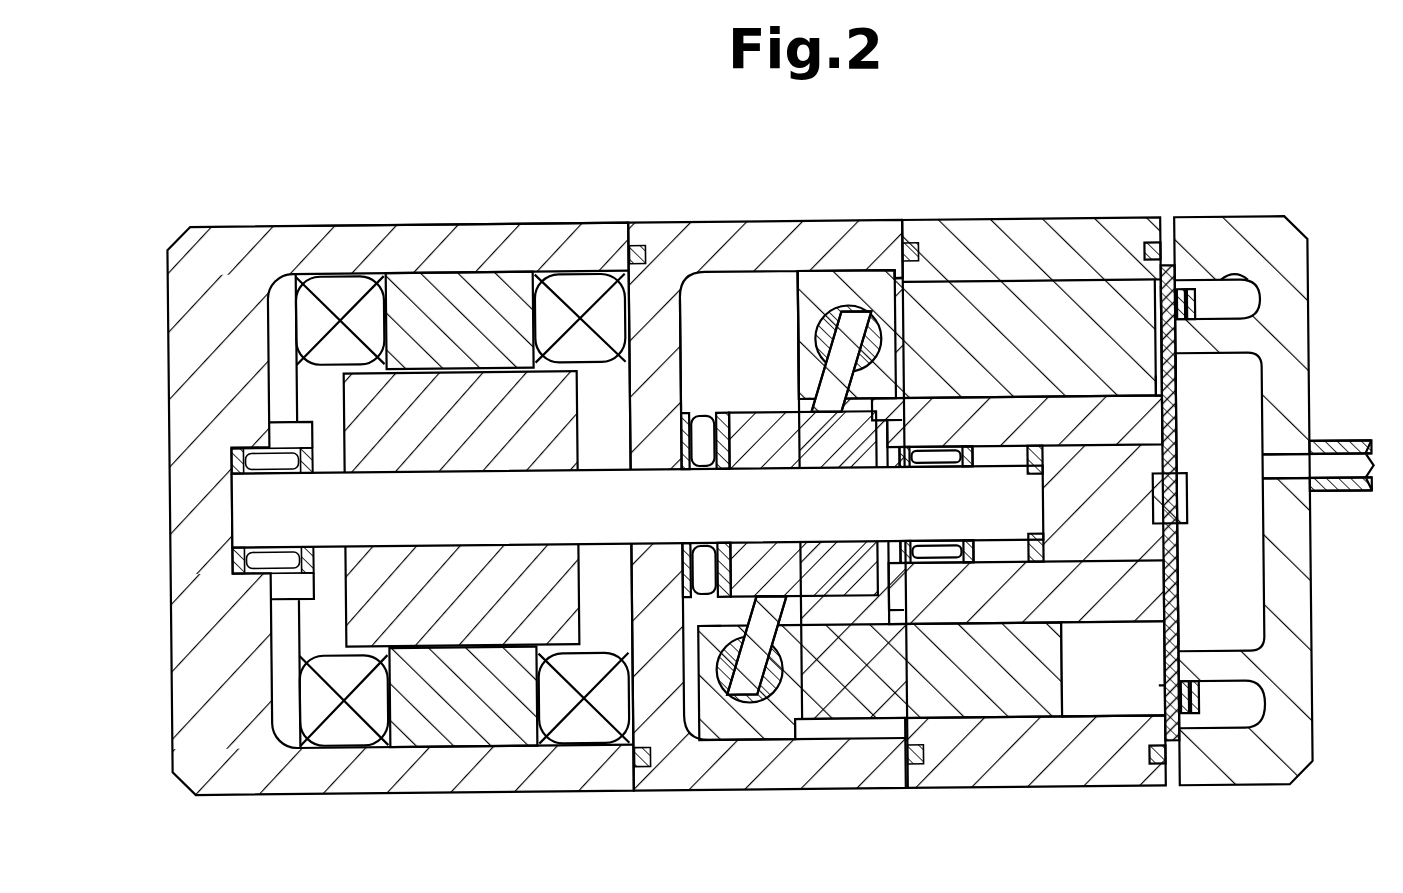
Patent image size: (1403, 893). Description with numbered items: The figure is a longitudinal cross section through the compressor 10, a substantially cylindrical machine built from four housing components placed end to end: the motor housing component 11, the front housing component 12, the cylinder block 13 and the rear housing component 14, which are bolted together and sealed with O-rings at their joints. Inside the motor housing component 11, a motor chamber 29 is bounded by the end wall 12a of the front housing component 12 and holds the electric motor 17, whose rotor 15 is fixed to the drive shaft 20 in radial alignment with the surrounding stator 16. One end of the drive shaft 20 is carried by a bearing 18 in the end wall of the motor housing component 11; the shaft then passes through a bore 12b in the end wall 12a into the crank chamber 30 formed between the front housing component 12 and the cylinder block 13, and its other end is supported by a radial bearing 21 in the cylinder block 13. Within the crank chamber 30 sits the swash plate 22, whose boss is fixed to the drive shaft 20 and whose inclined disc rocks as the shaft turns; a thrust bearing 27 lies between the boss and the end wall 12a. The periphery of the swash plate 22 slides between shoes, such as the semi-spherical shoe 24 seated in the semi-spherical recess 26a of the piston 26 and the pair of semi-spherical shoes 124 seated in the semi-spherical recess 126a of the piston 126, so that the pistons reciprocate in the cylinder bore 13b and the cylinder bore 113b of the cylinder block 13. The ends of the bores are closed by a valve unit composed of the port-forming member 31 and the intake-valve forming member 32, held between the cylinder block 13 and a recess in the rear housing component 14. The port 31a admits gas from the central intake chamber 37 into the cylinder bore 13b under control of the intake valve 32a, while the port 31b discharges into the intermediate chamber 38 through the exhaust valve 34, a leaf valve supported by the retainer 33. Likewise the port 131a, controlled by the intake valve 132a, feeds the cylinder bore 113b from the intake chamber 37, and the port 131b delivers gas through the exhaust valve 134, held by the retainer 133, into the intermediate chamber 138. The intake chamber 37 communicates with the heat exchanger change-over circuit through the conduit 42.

The compressor 10 is at (266, 220).
The motor housing component 11 is at (503, 228).
The front housing component 12 is at (695, 236).
The end wall 12a is at (680, 388).
The bore 12b is at (658, 396).
The cylinder block 13 is at (1049, 226).
The cylinder bore 13b is at (925, 292).
The rear housing component 14 is at (1259, 220).
The rotor 15 is at (362, 650).
The stator 16 is at (463, 722).
The electric motor 17 is at (463, 582).
The bearing 18 is at (270, 570).
The drive shaft 20 is at (603, 546).
The radial bearing 21 is at (938, 476).
The swash plate 22 is at (832, 584).
The semi-spherical shoe 24 is at (806, 314).
The piston 26 is at (1005, 292).
The semi-spherical recess 26a is at (880, 340).
The thrust bearing 27 is at (708, 412).
The motor chamber 29 is at (283, 655).
The crank chamber 30 is at (859, 724).
The port-forming member 31 is at (1170, 244).
The port 31a is at (1180, 384).
The port 31b is at (1163, 305).
The intake-valve forming member 32 is at (1140, 266).
The intake valve 32a is at (1163, 400).
The retainer 33 is at (1203, 316).
The exhaust valve 34 is at (1200, 300).
The intake chamber 37 is at (1223, 375).
The intermediate chamber 38 is at (1240, 277).
The conduit 42 is at (1346, 472).
The semi-spherical shoes 124 is at (782, 706).
The piston 126 is at (953, 705).
The semi-spherical recess 126a is at (713, 695).
The cylinder bore 113b is at (1090, 712).
The port 131a is at (1180, 633).
The port 131b is at (1165, 705).
The intake valve 132a is at (1163, 645).
The retainer 133 is at (1200, 724).
The exhaust valve 134 is at (1187, 730).
The intermediate chamber 138 is at (1265, 700).